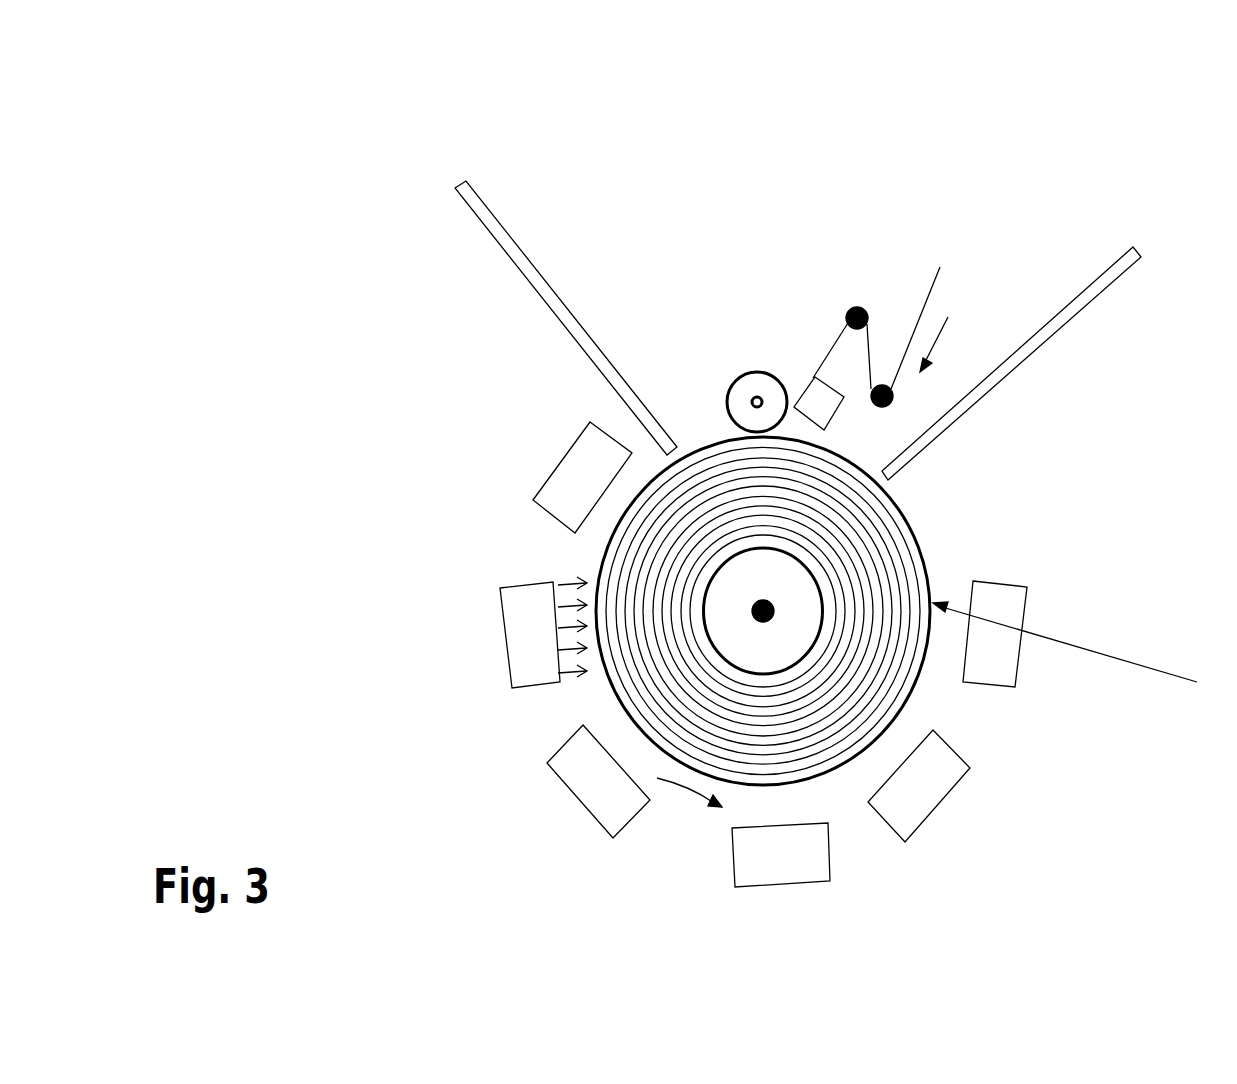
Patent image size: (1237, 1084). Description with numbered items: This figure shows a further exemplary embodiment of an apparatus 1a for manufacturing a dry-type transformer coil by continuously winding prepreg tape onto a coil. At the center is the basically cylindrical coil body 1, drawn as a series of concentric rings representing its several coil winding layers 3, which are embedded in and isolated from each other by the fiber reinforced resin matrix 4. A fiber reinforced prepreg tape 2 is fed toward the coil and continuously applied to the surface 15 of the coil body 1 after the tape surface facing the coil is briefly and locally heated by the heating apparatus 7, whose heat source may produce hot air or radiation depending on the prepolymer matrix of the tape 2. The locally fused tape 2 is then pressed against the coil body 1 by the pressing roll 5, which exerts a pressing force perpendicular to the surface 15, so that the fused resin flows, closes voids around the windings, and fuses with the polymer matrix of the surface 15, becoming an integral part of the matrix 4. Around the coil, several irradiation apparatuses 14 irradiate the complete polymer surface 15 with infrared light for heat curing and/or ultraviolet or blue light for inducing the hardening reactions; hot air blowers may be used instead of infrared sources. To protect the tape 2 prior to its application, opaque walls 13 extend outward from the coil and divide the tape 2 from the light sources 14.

The coil body 1 is at (863, 508).
The apparatus 1a is at (380, 222).
The tape 2 is at (817, 400).
The coil winding layers 3 is at (873, 536).
The fiber reinforced resin matrix 4 is at (866, 561).
The pressing roll 5 is at (739, 397).
The heating apparatus 7 is at (822, 339).
The opaque walls 13 is at (560, 310).
The irradiation apparatuses 14 is at (568, 492).
The surface 15 is at (1083, 640).